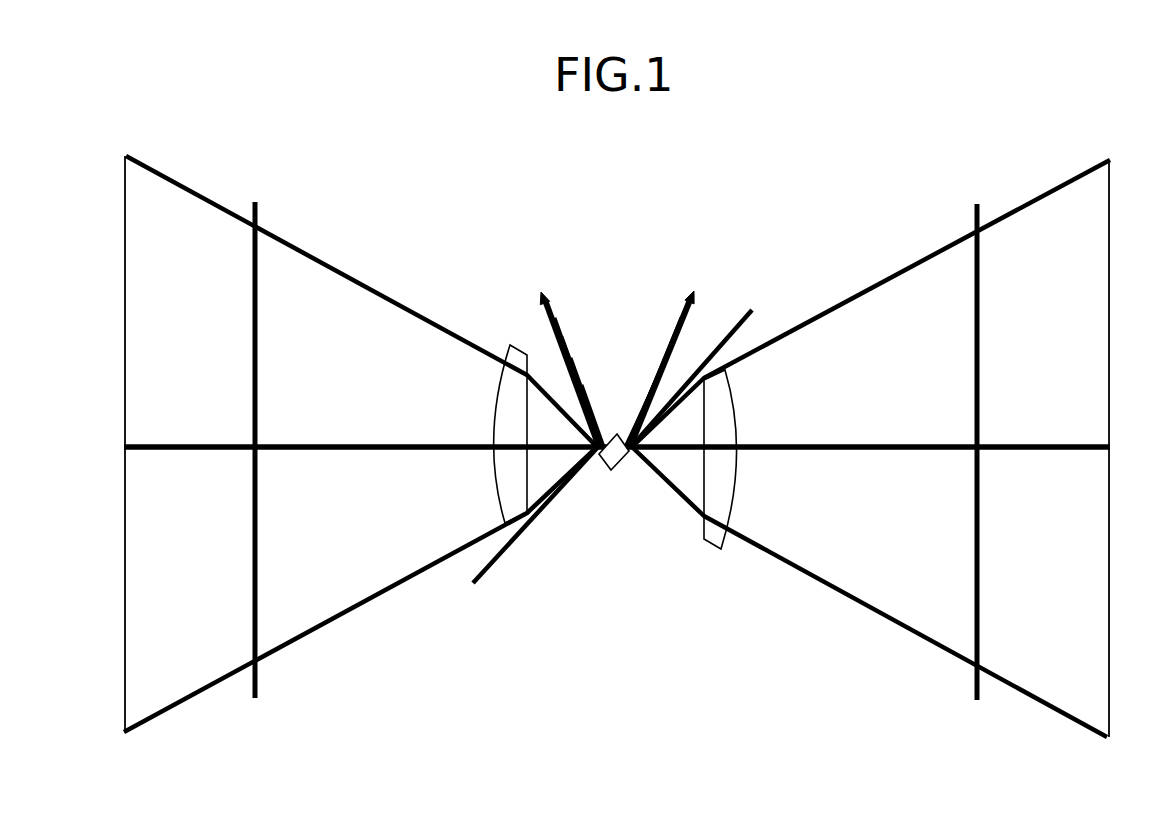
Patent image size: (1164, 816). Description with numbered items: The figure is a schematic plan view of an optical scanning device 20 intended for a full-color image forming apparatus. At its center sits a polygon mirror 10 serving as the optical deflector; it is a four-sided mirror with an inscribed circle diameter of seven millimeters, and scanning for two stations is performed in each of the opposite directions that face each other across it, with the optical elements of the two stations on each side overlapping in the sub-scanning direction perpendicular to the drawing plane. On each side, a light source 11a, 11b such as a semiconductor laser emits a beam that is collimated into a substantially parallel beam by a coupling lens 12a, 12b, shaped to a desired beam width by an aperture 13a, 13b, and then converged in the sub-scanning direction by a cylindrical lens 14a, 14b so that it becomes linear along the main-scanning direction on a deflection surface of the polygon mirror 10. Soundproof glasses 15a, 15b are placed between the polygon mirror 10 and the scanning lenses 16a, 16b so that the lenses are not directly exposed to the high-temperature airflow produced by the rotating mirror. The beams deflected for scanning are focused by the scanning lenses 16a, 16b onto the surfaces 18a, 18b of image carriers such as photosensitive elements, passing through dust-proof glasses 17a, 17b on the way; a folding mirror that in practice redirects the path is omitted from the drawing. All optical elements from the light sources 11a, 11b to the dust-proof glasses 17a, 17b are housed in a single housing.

The optical scanning device 20 is at (716, 238).
The polygon mirror 10 is at (620, 472).
The light source 11a is at (693, 296).
The light source 11b is at (544, 296).
The coupling lens 12a is at (680, 320).
The coupling lens 12b is at (556, 320).
The aperture 13a is at (669, 341).
The aperture 13b is at (564, 339).
The cylindrical lens 14a is at (660, 366).
The cylindrical lens 14b is at (573, 360).
The soundproof glass 15a is at (651, 394).
The soundproof glass 15b is at (595, 394).
The scanning lens 16a is at (737, 503).
The scanning lens 16b is at (492, 463).
The dust-proof glass 17a is at (987, 619).
The dust-proof glass 17b is at (253, 610).
The surface of image carrier 18a is at (1116, 619).
The surface of image carrier 18b is at (123, 556).